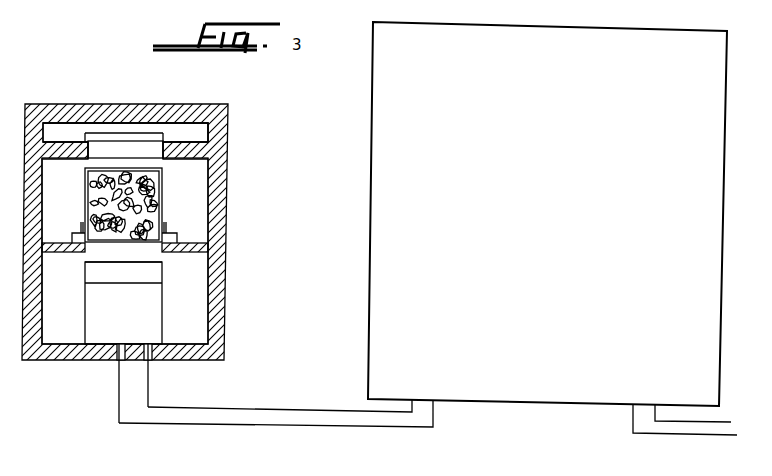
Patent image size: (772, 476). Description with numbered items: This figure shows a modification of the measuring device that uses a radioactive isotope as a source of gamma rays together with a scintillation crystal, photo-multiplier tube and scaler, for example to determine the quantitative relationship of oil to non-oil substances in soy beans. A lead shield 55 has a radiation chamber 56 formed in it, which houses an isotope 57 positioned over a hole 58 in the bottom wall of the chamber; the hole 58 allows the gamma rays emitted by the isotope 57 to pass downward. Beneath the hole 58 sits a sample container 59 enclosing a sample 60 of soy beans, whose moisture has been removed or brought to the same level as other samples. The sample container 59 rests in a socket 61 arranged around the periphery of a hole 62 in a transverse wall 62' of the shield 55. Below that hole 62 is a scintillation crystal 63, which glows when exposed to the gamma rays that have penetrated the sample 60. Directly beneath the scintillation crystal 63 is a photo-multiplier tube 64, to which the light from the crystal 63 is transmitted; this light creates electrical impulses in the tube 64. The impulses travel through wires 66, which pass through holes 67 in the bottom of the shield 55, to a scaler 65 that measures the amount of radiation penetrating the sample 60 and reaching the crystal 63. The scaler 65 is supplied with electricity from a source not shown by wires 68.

The lead shield 55 is at (228, 128).
The radiation chamber 56 is at (184, 131).
The isotope 57 is at (99, 132).
The hole 58 is at (122, 153).
The sample container 59 is at (152, 210).
The sample 60 is at (100, 198).
The socket 61 is at (80, 225).
The hole 62 is at (125, 259).
The transverse wall 62' is at (182, 225).
The scintillation crystal 63 is at (86, 273).
The photo-multiplier tube 64 is at (138, 309).
The scaler 65 is at (557, 404).
The wires 66 is at (280, 407).
The holes 67 is at (150, 362).
The wires 68 is at (726, 434).